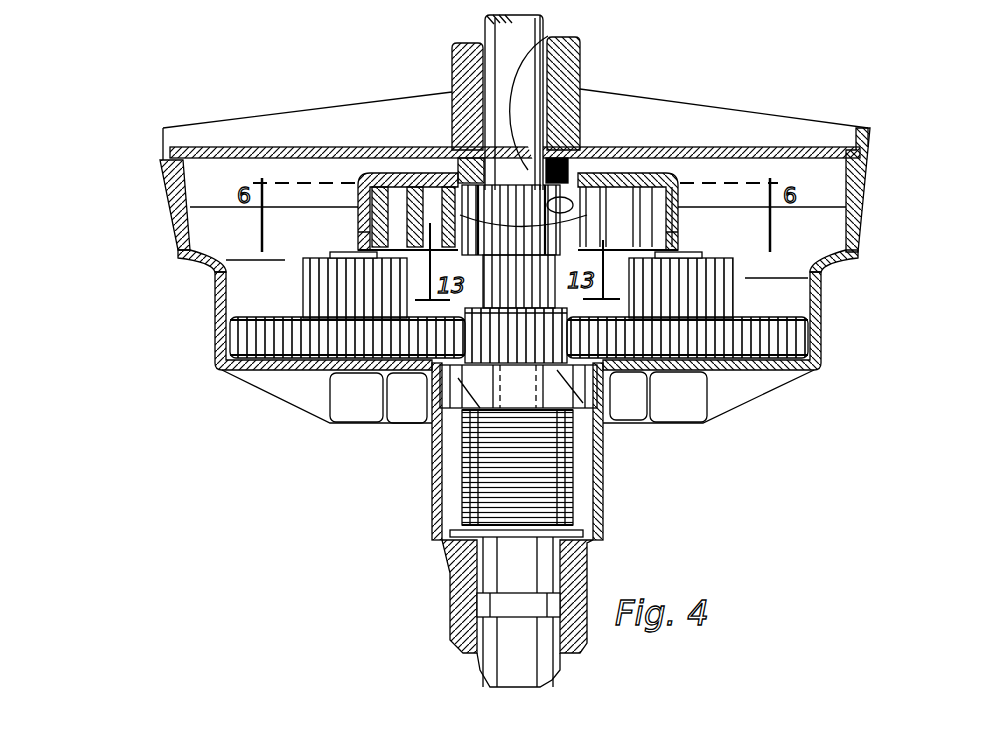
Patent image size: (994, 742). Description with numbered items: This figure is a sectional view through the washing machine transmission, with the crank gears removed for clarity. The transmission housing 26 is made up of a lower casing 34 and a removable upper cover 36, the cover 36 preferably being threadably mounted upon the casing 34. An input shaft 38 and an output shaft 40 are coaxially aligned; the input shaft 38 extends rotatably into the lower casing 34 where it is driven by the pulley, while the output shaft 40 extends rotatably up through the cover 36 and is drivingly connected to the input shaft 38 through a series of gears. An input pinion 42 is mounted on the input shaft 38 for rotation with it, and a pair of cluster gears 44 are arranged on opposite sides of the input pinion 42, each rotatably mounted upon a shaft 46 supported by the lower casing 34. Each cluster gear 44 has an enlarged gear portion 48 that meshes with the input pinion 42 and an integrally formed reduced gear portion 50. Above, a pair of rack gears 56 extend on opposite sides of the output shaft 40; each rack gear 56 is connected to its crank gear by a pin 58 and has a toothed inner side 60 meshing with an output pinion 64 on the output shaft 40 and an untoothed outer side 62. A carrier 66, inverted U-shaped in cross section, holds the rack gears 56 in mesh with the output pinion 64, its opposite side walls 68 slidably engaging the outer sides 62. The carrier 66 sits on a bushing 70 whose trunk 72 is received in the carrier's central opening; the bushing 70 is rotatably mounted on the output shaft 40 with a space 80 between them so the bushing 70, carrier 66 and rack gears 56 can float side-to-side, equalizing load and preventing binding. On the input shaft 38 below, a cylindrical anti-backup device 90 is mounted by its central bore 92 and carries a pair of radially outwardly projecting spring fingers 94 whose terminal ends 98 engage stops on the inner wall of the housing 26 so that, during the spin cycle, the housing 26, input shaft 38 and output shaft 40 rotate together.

The transmission housing 26 is at (148, 159).
The lower casing 34 is at (215, 325).
The upper cover 36 is at (163, 128).
The input shaft 38 is at (450, 577).
The output shaft 40 is at (541, 14).
The input pinion 42 is at (603, 426).
The cluster gears 44 is at (311, 381).
The shaft 46 is at (340, 268).
The enlarged gear portion 48 is at (284, 374).
The reduced gear portion 50 is at (303, 288).
The rack gears 56 is at (407, 160).
The pin 58 is at (385, 0).
The toothed inner side 60 is at (607, 158).
The untoothed outer side 62 is at (357, 207).
The output pinion 64 is at (412, 140).
The carrier 66 is at (678, 168).
The side walls 68 is at (357, 230).
The bushing 70 is at (593, 158).
The trunk 72 is at (452, 48).
The space 80 is at (548, 36).
The anti-backup device 90 is at (467, 452).
The central bore 92 is at (455, 493).
The spring fingers 94 is at (487, 470).
The terminal end 98 is at (427, 398).